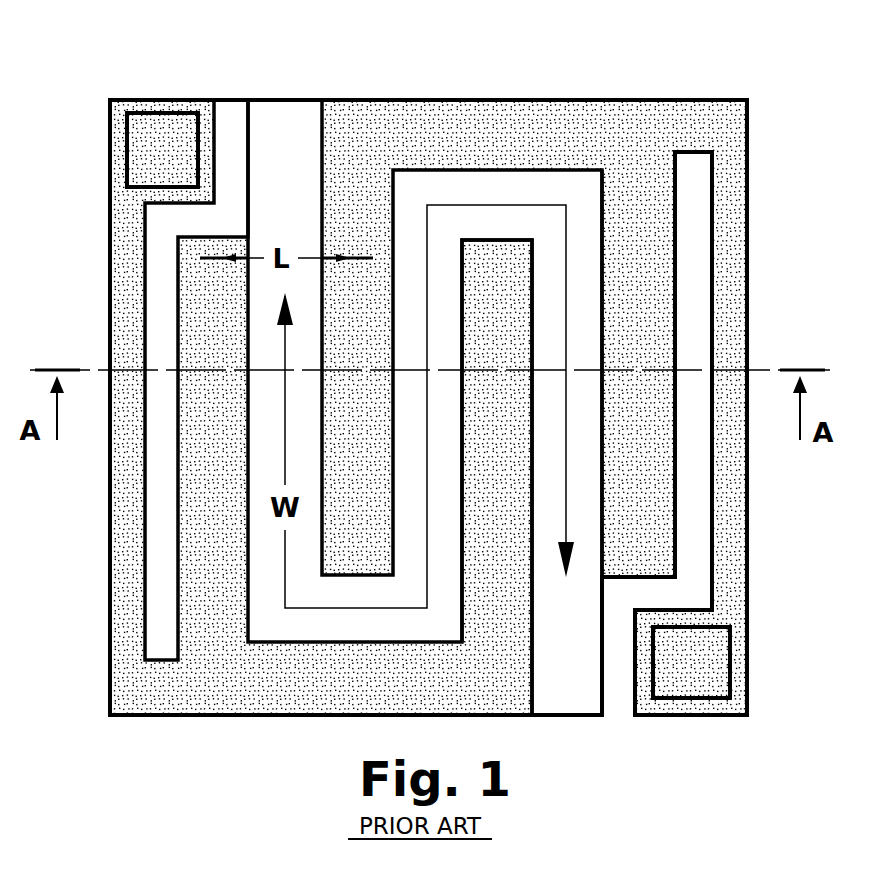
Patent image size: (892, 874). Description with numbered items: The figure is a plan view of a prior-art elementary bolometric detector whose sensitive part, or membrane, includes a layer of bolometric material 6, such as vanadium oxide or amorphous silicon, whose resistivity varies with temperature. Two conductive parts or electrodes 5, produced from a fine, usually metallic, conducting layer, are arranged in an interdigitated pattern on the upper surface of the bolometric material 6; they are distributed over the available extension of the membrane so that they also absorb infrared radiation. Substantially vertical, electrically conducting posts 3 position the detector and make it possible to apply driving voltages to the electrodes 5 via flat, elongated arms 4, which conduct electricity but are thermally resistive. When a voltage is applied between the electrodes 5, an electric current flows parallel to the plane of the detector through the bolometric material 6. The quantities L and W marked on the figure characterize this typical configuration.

The post 3 is at (162, 132).
The arm 4 is at (128, 333).
The electrode 5 is at (630, 398).
The bolometric material 6 is at (413, 215).